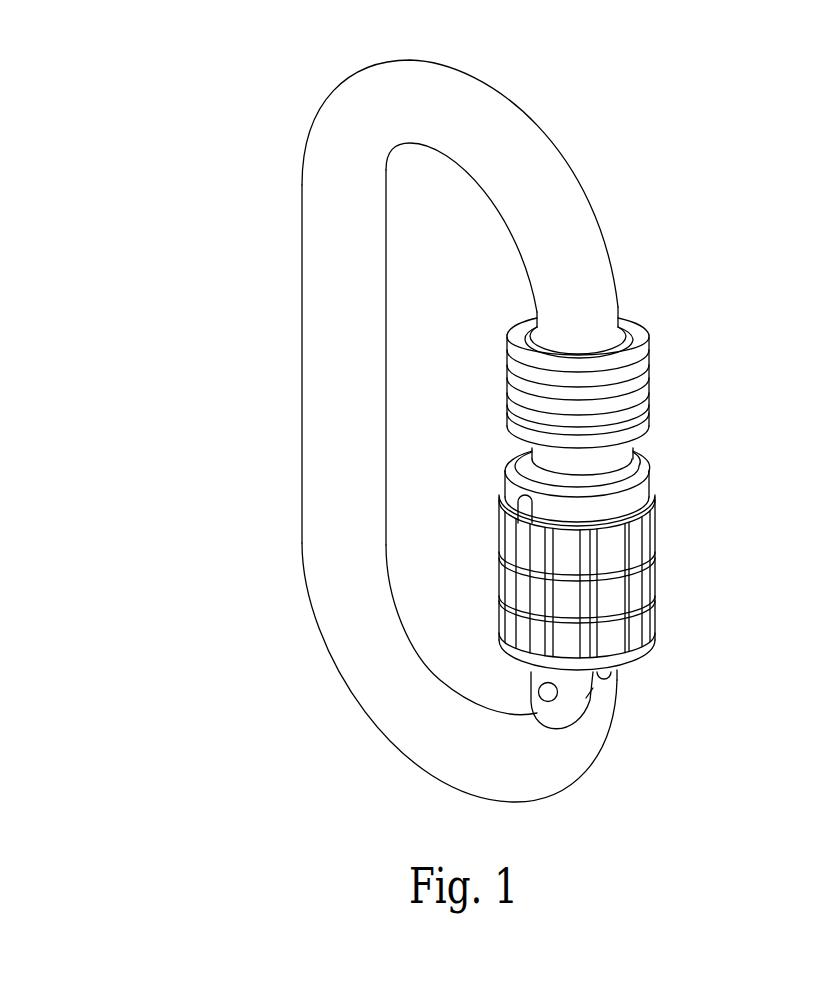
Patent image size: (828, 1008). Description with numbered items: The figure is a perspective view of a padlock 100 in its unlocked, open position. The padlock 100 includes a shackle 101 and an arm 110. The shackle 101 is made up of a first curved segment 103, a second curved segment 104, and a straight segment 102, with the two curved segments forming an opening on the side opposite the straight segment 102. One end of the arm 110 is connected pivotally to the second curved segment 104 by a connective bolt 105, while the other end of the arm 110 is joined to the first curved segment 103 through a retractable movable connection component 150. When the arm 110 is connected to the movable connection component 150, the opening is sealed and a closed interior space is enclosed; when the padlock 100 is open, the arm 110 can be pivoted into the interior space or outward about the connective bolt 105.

The padlock 100 is at (432, 418).
The shackle 101 is at (337, 418).
The straight segment 102 is at (320, 393).
The first curved segment 103 is at (430, 103).
The second curved segment 104 is at (421, 672).
The connective bolt 105 is at (548, 692).
The arm 110 is at (676, 566).
The movable connection component 150 is at (646, 412).